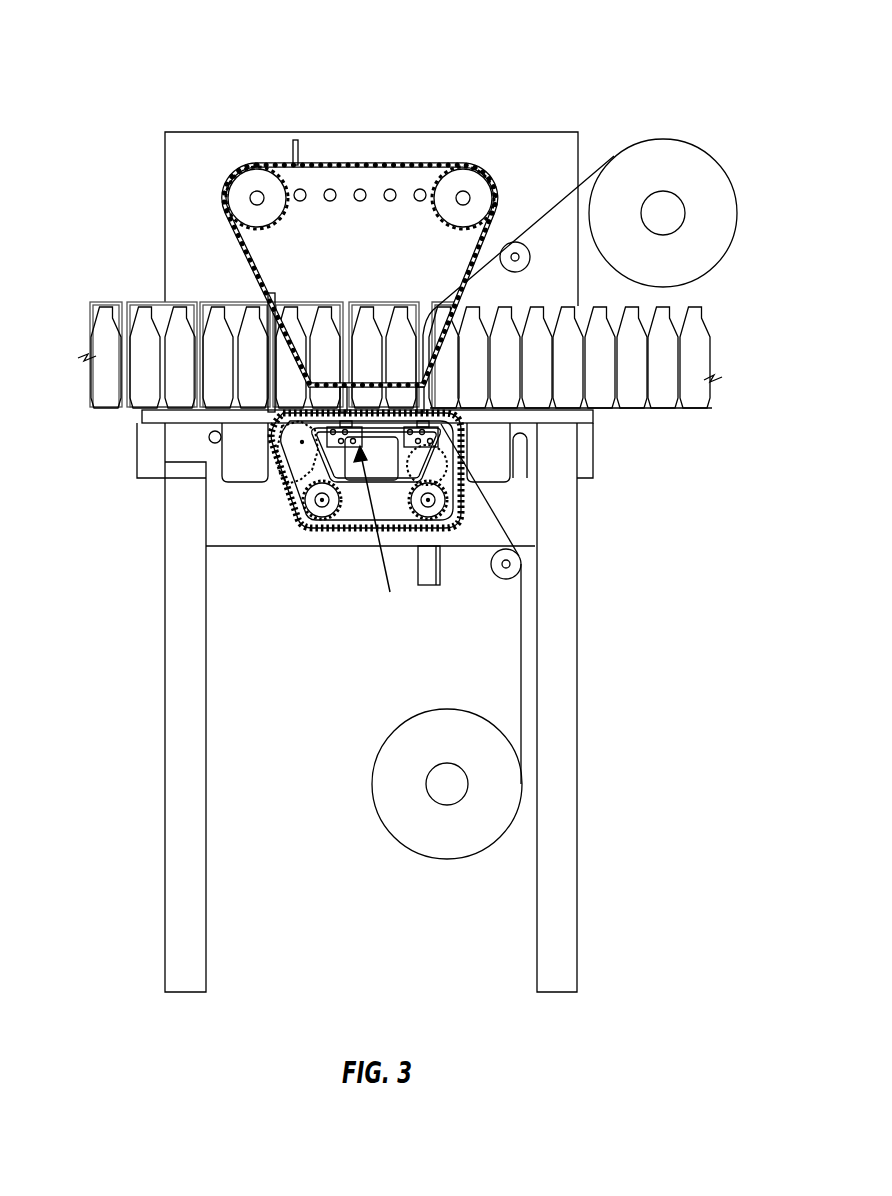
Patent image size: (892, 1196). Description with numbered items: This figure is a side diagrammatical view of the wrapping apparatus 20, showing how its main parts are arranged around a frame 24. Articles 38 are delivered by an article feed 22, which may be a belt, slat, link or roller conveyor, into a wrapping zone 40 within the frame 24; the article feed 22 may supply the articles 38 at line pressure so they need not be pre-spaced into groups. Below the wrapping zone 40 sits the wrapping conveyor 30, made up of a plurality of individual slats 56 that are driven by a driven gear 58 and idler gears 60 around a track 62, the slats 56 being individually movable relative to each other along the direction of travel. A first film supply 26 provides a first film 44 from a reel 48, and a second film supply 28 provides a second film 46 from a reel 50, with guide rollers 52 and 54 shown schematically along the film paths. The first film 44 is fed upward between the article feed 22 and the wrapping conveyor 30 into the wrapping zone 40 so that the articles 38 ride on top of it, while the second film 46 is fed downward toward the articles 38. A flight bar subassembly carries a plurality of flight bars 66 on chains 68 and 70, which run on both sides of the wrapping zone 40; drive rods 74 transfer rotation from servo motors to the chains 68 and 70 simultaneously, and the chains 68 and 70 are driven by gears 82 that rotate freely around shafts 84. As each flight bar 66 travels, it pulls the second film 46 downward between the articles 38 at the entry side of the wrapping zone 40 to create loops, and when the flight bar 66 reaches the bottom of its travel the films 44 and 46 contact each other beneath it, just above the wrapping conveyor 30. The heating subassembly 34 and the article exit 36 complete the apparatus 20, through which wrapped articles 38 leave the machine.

The apparatus 20 is at (233, 52).
The article feed 22 is at (604, 413).
The frame 24 is at (578, 690).
The first film supply 26 is at (432, 779).
The second film supply 28 is at (671, 178).
The wrapping conveyor 30 is at (382, 505).
The heating subassembly 34 is at (377, 531).
The article exit 36 is at (142, 413).
The articles 38 is at (413, 327).
The wrapping zone 40 is at (268, 297).
The first film 44 is at (521, 670).
The second film 46 is at (567, 187).
The reel 48 is at (445, 858).
The reel 50 is at (725, 172).
The guide roller 52 is at (497, 578).
The guide roller 54 is at (525, 268).
The slats 56 is at (450, 513).
The driven gear 58 is at (450, 452).
The idler gears 60 is at (293, 452).
The track 62 is at (287, 487).
The flight bars 66 is at (302, 146).
The chain 68 is at (360, 230).
The chain 70 is at (360, 162).
The drive rods 74 is at (420, 201).
The gears 82 is at (240, 190).
The shafts 84 is at (257, 191).